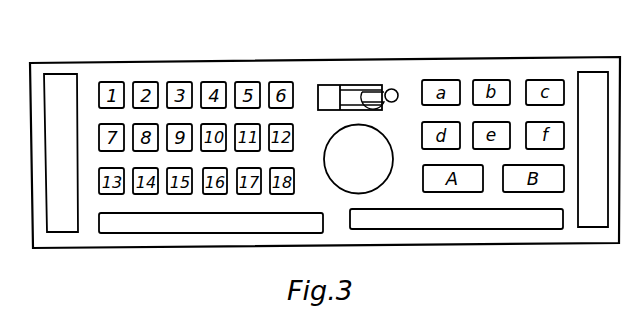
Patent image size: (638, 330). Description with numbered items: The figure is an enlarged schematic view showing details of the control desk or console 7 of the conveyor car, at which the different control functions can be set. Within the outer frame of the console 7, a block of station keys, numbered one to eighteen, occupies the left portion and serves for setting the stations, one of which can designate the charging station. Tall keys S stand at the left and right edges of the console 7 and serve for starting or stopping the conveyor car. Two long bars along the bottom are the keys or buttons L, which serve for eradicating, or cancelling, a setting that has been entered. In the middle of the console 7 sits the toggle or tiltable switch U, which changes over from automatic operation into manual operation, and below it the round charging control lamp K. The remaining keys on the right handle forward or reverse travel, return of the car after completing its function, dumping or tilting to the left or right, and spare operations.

The control desk or console 7 is at (352, 74).
The toggle or tiltable switch U is at (387, 103).
The charging control lamp K is at (358, 159).
The keys for starting or stopping S is at (326, 152).
The keys or buttons for eradicating the setting L is at (331, 221).